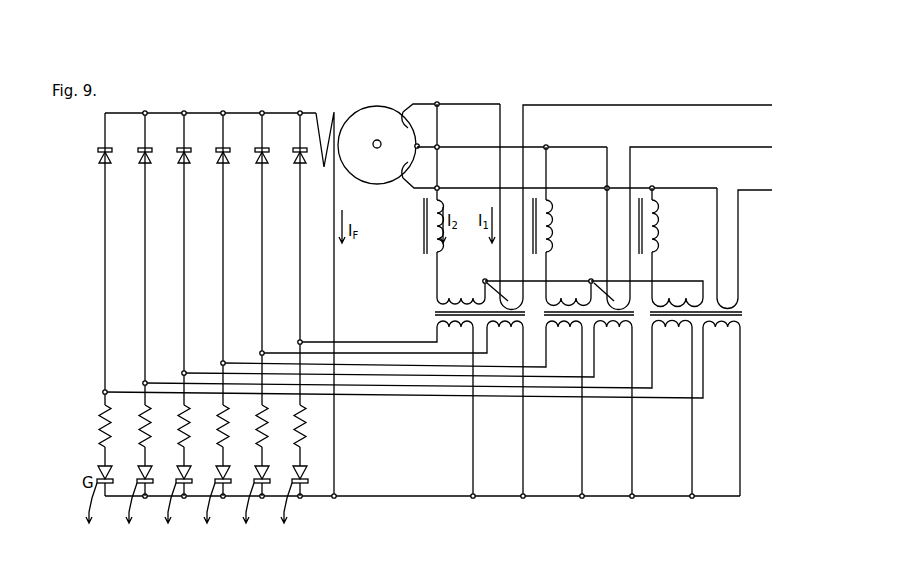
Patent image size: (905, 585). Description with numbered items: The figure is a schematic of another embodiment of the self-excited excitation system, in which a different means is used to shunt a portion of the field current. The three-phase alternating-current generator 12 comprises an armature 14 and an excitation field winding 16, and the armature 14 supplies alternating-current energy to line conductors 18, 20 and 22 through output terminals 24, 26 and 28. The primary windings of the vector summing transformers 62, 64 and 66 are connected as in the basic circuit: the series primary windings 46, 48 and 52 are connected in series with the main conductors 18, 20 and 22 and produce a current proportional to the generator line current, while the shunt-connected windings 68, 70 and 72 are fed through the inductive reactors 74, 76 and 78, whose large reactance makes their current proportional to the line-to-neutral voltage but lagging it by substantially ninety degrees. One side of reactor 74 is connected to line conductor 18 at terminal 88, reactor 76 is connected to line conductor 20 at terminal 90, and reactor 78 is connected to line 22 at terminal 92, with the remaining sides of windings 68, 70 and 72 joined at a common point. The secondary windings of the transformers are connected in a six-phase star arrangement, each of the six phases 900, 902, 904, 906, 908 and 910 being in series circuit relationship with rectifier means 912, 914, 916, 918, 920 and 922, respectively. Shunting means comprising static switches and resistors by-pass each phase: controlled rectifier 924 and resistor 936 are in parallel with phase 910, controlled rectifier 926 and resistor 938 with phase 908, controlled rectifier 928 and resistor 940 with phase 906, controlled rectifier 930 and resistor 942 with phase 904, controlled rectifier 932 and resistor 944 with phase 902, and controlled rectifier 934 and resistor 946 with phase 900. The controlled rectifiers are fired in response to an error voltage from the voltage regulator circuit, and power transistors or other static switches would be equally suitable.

The three-phase alternating-current generator 12 is at (385, 96).
The armature 14 is at (378, 185).
The excitation field winding 16 is at (338, 106).
The line conductor 18 is at (768, 107).
The line conductor 20 is at (768, 149).
The line conductor 22 is at (768, 192).
The output terminal 24 is at (419, 116).
The output terminal 26 is at (419, 144).
The output terminal 28 is at (559, 175).
The primary winding 46 is at (529, 272).
The primary winding 48 is at (639, 279).
The primary winding 52 is at (728, 306).
The vector summing transformer 62 is at (473, 254).
The vector summing transformer 64 is at (585, 254).
The vector summing transformer 66 is at (696, 254).
The primary winding 68 is at (461, 293).
The primary winding 70 is at (568, 293).
The primary winding 72 is at (677, 297).
The inductive reactor 74 is at (425, 226).
The reactor 76 is at (548, 232).
The reactor 78 is at (654, 237).
The terminal 88 is at (449, 103).
The terminal 90 is at (548, 145).
The terminal 92 is at (654, 186).
The phase 900 is at (385, 408).
The phase 902 is at (392, 408).
The phase 904 is at (402, 408).
The phase 906 is at (408, 408).
The phase 908 is at (418, 408).
The phase 910 is at (422, 408).
The rectifier means 912 is at (100, 160).
The rectifier means 914 is at (140, 160).
The rectifier means 916 is at (179, 160).
The rectifier means 918 is at (218, 160).
The rectifier means 920 is at (257, 160).
The rectifier means 922 is at (295, 160).
The controlled rectifier 924 is at (98, 478).
The controlled rectifier 926 is at (136, 470).
The controlled rectifier 928 is at (193, 485).
The controlled rectifier 930 is at (214, 470).
The controlled rectifier 932 is at (272, 487).
The controlled rectifier 934 is at (306, 470).
The resistor 936 is at (100, 418).
The resistor 938 is at (142, 378).
The resistor 940 is at (181, 367).
The resistor 942 is at (220, 356).
The resistor 944 is at (259, 346).
The resistor 946 is at (305, 428).